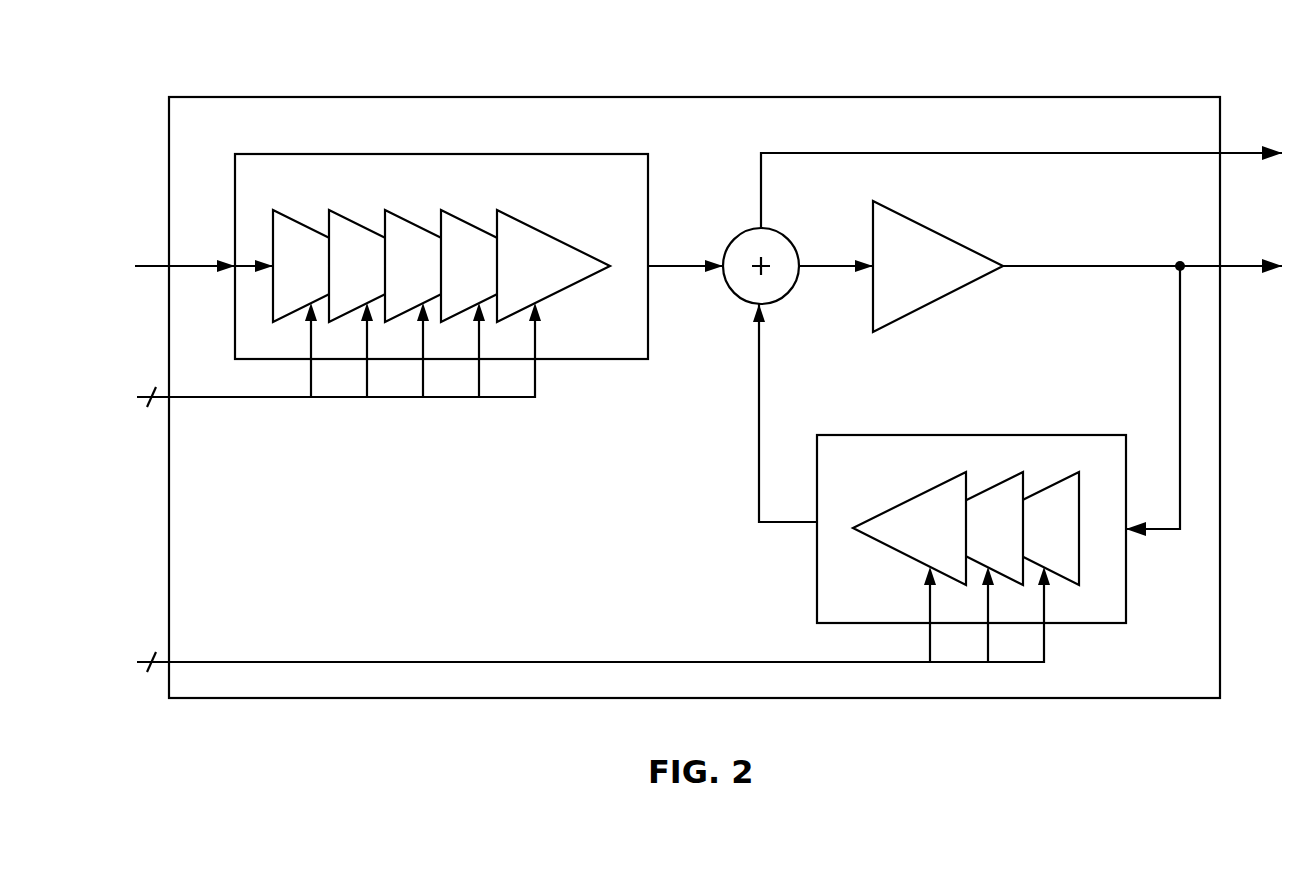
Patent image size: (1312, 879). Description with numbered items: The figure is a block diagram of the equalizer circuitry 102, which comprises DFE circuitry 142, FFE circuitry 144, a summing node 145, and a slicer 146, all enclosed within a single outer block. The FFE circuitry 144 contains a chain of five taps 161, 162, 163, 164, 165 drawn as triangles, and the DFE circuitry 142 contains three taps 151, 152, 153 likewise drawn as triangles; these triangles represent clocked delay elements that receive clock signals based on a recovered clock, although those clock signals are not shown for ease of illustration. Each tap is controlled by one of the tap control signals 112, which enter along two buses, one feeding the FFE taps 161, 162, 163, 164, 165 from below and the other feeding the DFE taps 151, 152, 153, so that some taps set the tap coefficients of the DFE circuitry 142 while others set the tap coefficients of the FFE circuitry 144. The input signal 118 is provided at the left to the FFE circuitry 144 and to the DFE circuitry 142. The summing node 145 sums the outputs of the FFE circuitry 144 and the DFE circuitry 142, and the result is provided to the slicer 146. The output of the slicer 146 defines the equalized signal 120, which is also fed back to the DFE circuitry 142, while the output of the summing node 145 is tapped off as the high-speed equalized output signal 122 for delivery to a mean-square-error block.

The equalizer circuitry 102 is at (1071, 97).
The tap control signals 112 is at (257, 398).
The input signal 118 is at (145, 262).
The equalized signal 120 is at (1248, 266).
The high-speed equalized output signal 122 is at (1245, 153).
The DFE circuitry 142 is at (816, 572).
The FFE circuitry 144 is at (623, 360).
The summing node 145 is at (734, 236).
The slicer 146 is at (945, 236).
The tap 151 is at (907, 500).
The tap 152 is at (991, 480).
The tap 153 is at (1060, 478).
The tap 161 is at (296, 220).
The tap 162 is at (350, 215).
The tap 163 is at (410, 222).
The tap 164 is at (478, 228).
The tap 165 is at (503, 213).